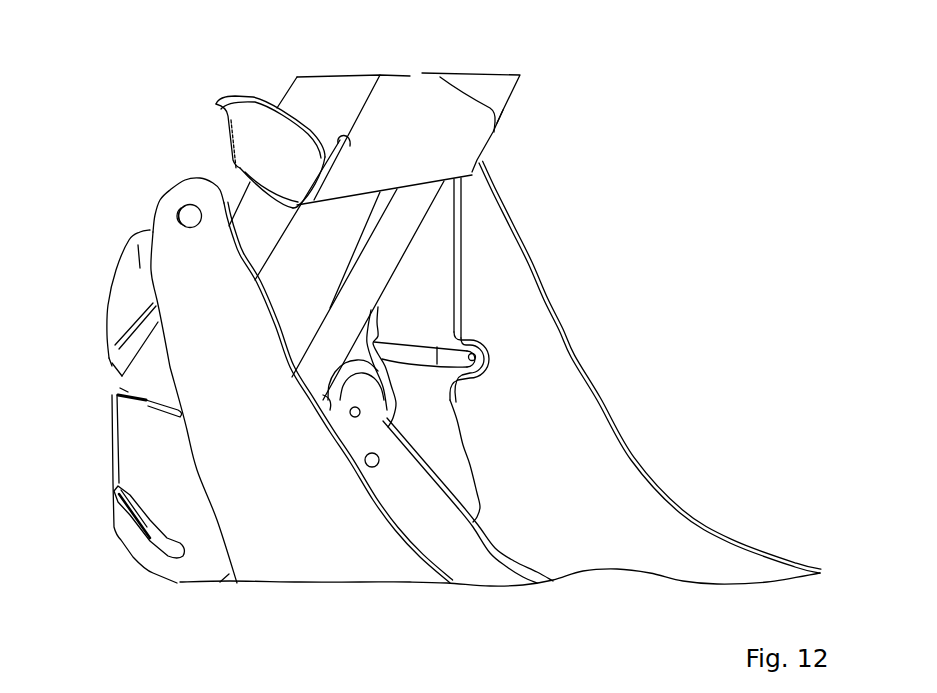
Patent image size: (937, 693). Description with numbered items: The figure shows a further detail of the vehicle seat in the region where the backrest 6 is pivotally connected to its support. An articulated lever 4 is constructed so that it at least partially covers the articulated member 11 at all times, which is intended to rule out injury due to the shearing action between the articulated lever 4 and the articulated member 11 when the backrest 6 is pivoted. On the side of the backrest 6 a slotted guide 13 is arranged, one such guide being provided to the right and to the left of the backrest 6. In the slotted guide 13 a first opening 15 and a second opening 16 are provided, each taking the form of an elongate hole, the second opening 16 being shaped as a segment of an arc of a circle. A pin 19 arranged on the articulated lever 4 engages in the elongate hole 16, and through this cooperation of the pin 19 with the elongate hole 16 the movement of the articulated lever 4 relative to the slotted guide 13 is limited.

The articulated lever 4 is at (173, 197).
The backrest 6 is at (217, 140).
The articulated member 11 is at (467, 560).
The slotted guide 13 is at (140, 268).
The first opening 15 is at (125, 346).
The second opening 16 is at (162, 401).
The pin 19 is at (476, 357).